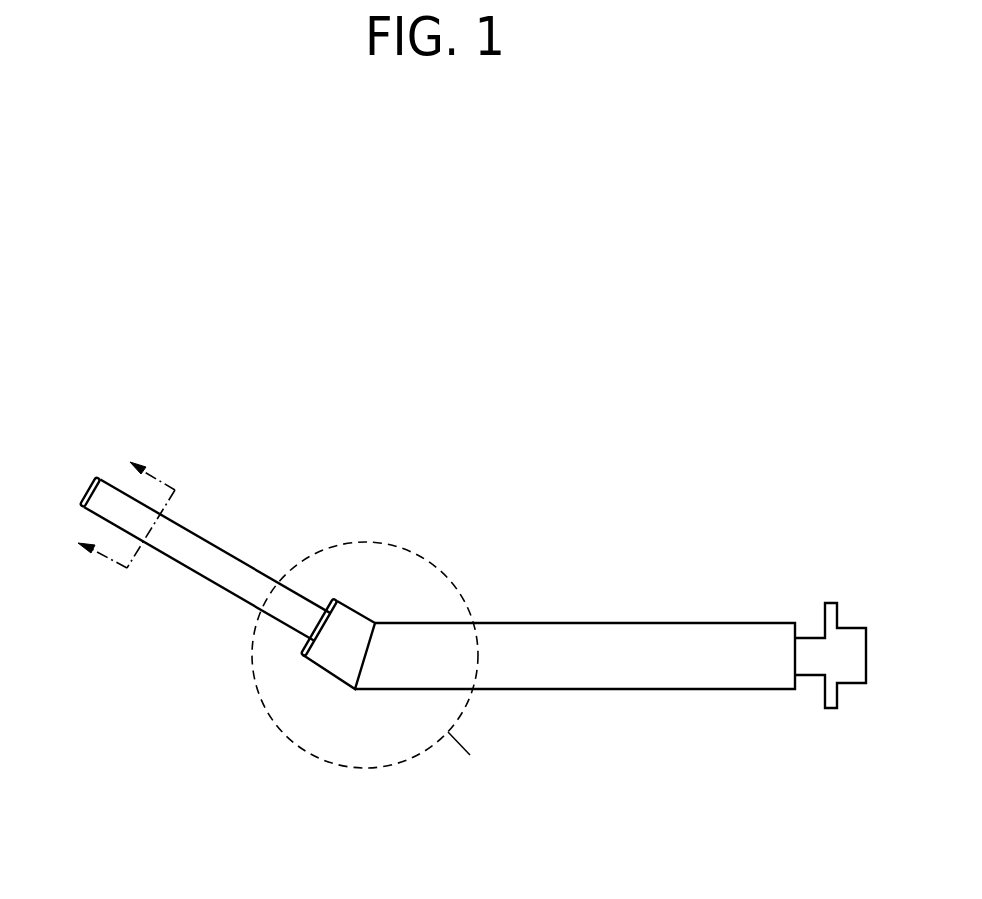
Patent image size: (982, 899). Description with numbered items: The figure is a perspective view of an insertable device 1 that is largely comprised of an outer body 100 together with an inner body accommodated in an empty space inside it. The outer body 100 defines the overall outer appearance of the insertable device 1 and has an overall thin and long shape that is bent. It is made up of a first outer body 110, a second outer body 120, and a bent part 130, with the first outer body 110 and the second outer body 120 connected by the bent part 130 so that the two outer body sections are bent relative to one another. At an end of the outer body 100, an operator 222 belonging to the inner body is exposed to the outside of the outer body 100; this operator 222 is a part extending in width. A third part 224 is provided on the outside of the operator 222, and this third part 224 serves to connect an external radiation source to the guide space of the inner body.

The insertable device 1 is at (645, 436).
The outer body 100 is at (553, 482).
The first outer body 110 is at (228, 550).
The second outer body 120 is at (523, 622).
The bent part 130 is at (381, 622).
The operator 222 is at (828, 603).
The third part 224 is at (850, 683).